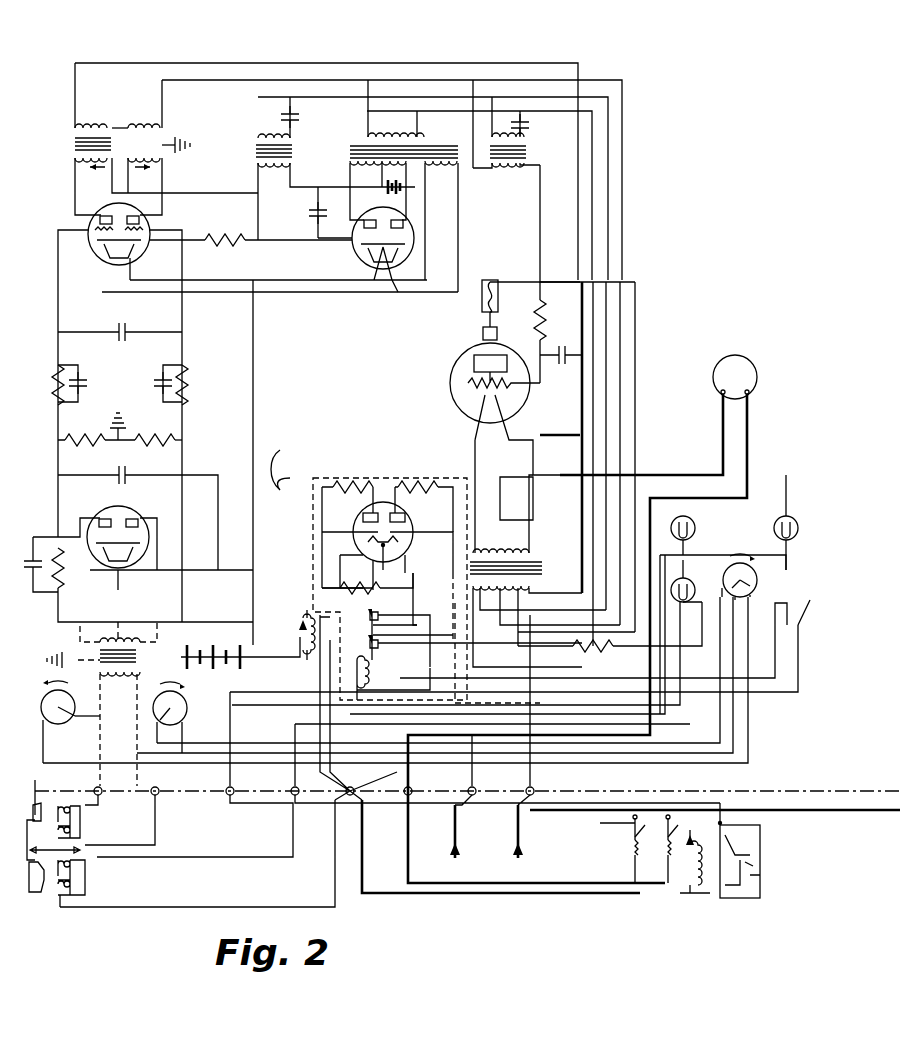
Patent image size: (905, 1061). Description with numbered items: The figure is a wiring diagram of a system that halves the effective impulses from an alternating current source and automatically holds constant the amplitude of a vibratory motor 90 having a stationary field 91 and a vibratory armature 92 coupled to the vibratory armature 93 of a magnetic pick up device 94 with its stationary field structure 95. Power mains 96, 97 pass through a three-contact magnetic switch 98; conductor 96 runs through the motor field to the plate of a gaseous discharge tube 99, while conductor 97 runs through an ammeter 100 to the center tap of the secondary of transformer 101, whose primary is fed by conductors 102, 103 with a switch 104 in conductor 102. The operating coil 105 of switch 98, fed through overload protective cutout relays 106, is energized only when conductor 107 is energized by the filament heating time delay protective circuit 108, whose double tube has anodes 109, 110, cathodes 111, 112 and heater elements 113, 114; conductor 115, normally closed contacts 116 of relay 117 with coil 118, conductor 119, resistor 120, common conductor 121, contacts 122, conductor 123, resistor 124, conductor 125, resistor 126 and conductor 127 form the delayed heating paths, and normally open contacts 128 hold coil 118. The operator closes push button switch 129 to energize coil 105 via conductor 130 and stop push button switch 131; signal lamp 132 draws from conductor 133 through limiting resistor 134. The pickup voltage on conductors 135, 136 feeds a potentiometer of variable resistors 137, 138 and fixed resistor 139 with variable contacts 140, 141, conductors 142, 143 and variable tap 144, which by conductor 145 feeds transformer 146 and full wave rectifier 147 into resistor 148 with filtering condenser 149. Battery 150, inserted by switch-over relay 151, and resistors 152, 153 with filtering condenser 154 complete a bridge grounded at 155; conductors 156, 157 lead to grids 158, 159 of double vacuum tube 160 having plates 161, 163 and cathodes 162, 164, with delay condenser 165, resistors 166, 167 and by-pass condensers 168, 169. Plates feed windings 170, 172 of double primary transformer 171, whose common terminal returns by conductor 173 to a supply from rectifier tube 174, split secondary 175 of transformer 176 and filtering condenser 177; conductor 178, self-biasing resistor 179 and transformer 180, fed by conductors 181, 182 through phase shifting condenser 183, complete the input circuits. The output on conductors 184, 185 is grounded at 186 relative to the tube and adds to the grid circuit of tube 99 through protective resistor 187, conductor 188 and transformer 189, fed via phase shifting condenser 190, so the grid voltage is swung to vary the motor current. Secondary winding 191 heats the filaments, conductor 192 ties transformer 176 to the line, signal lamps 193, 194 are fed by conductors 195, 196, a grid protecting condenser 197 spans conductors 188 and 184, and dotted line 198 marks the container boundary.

The vibratory motor 90 is at (78, 915).
The stationary field 91 is at (85, 886).
The vibratory armature 92 is at (45, 892).
The vibratory armature 93 is at (31, 814).
The magnetic pick up device 94 is at (55, 800).
The stationary field structure 95 is at (78, 826).
The power main 96 is at (640, 345).
The power main 97 is at (660, 470).
The three-contact magnetic switch 98 is at (712, 870).
The gaseous discharge electronic tube 99 is at (450, 388).
The ammeter 100 is at (745, 357).
The transformer 101 is at (540, 555).
The conductor 102 is at (585, 680).
The conductor 103 is at (540, 782).
The switch 104 is at (790, 655).
The operating coil 105 is at (685, 893).
The overload protective cutout relays 106 is at (670, 875).
The conductor 107 is at (240, 710).
The filament heating time delay protective circuit 108 is at (310, 487).
The anode 109 is at (387, 538).
The anode 110 is at (400, 517).
The cathode 111 is at (360, 521).
The cathode 112 is at (400, 532).
The heater element 113 is at (368, 540).
The heater element 114 is at (395, 548).
The conductor 115 is at (460, 520).
The normally closed contacts 116 is at (385, 655).
The relay 117 is at (335, 670).
The operating coil 118 is at (365, 685).
The conductor 119 is at (322, 512).
The resistor 120 is at (322, 590).
The common conductor 121 is at (427, 598).
The normally closed contacts 122 is at (370, 612).
The conductor 123 is at (445, 670).
The resistor 124 is at (355, 472).
The conductor 125 is at (345, 557).
The resistor 126 is at (437, 472).
The conductor 127 is at (500, 520).
The normally open contacts 128 is at (355, 628).
The push button switch 129 is at (740, 860).
The conductor 130 is at (760, 855).
The stop push button switch 131 is at (755, 880).
The signal lamp 132 is at (789, 515).
The conductor 133 is at (702, 646).
The limiting resistor 134 is at (580, 648).
The conductor 135 is at (100, 775).
The conductor 136 is at (155, 775).
The variable resistor 137 is at (45, 695).
The variable resistor 138 is at (192, 708).
The fixed resistor 139 is at (745, 560).
The variable contact 140 is at (95, 705).
The variable contact 141 is at (178, 712).
The conductor 142 is at (250, 762).
The conductor 143 is at (710, 728).
The variable tap 144 is at (750, 585).
The conductor 145 is at (625, 758).
The transformer 146 is at (142, 655).
The full wave vacuum tube rectifier 147 is at (148, 505).
The resistor 148 is at (60, 575).
The filtering condenser 149 is at (38, 537).
The battery 150 is at (218, 650).
The switch-over relay 151 is at (290, 655).
The resistor 152 is at (85, 438).
The resistor 153 is at (152, 438).
The filtering condenser 154 is at (128, 470).
The ground 155 is at (119, 412).
The conductor 156 is at (58, 283).
The conductor 157 is at (182, 318).
The grid 158 is at (95, 244).
The grid 159 is at (140, 236).
The double three-electrode vacuum tube 160 is at (148, 226).
The plate 161 is at (107, 215).
The cathode 162 is at (105, 250).
The plate 163 is at (148, 212).
The cathode 164 is at (133, 252).
The condenser 165 is at (128, 322).
The resistor 166 is at (58, 375).
The resistor 167 is at (183, 390).
The by-pass condenser 168 is at (84, 378).
The by-pass condenser 169 is at (158, 372).
The winding 170 is at (78, 153).
The double primary transformer 171 is at (170, 142).
The winding 172 is at (163, 158).
The conductor 173 is at (220, 197).
The full wave rectifier tube 174 is at (356, 252).
The split secondary 175 is at (350, 170).
The transformer 176 is at (348, 146).
The filtering condenser 177 is at (313, 190).
The conductor 178 is at (330, 163).
The self-biasing resistor 179 is at (235, 243).
The transformer 180 is at (252, 150).
The conductor 181 is at (608, 148).
The conductor 182 is at (600, 185).
The phase shifting condenser 183 is at (300, 96).
The conductor 184 is at (112, 62).
The conductor 185 is at (183, 79).
The ground 186 is at (404, 188).
The protective resistor 187 is at (540, 325).
The conductor 188 is at (540, 220).
The transformer 189 is at (528, 148).
The phase shifting condenser 190 is at (528, 118).
The secondary winding 191 is at (500, 170).
The conductor 192 is at (624, 243).
The signal lamp 193 is at (700, 523).
The signal lamp 194 is at (690, 570).
The conductor 195 is at (575, 718).
The conductor 196 is at (680, 695).
The grid protecting condenser 197 is at (560, 366).
The dotted line 198 is at (760, 810).